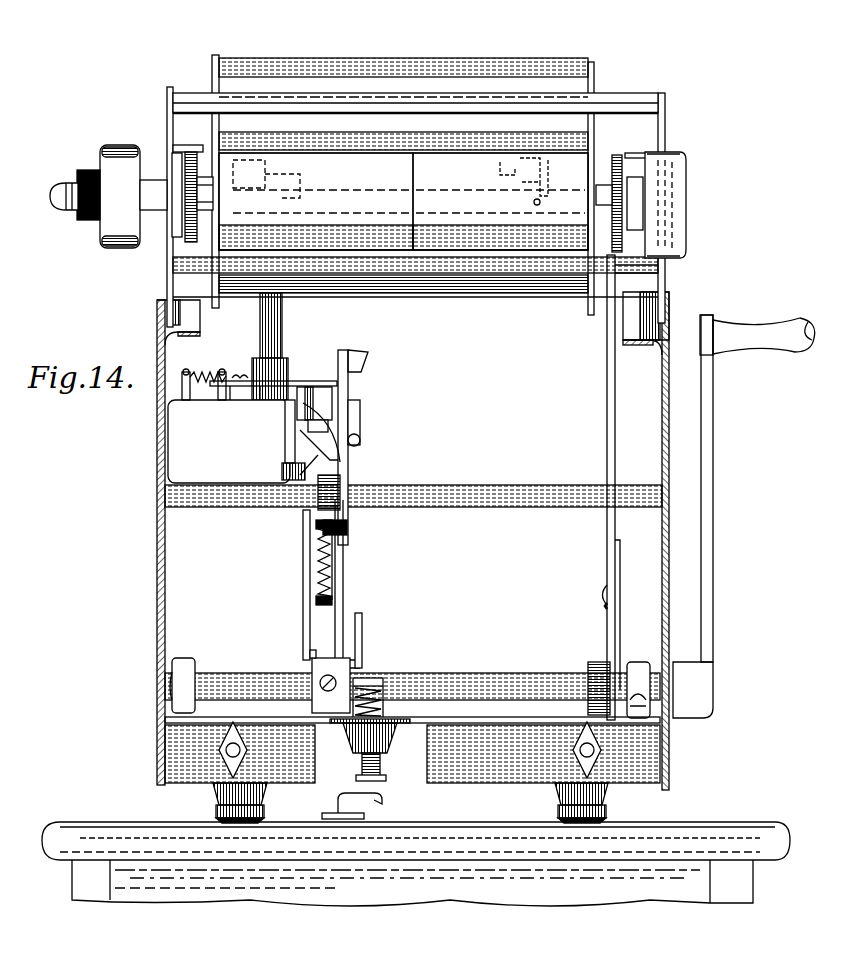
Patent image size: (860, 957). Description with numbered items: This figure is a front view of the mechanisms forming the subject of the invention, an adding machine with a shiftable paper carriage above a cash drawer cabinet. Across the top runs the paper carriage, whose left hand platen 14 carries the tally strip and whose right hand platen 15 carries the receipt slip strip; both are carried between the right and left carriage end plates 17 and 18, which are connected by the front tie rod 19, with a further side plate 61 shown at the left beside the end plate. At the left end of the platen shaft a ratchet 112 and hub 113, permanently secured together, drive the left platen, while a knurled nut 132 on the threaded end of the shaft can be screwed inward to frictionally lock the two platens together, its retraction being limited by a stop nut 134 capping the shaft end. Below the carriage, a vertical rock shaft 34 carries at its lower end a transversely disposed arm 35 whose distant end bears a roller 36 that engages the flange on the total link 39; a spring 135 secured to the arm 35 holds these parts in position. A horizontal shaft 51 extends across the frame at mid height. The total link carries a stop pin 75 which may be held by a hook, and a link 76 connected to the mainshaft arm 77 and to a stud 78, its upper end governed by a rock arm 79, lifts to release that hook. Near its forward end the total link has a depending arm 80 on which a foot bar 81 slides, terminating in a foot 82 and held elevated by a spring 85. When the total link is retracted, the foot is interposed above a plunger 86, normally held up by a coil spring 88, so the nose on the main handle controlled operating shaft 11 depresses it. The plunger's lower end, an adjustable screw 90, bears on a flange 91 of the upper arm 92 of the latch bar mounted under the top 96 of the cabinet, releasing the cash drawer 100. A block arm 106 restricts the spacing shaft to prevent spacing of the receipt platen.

The main handle controlled operating shaft 11 is at (470, 682).
The left hand platen 14 is at (316, 201).
The right hand platen 15 is at (500, 201).
The right carriage end plate 17 is at (594, 94).
The left carriage end plate 18 is at (212, 68).
The front tie rod 19 is at (403, 132).
The vertical rock shaft 34 is at (280, 325).
The transversely disposed arm 35 is at (245, 392).
The roller 36 is at (348, 392).
The total link 39 is at (348, 451).
The shaft 51 is at (452, 486).
The side plate 61 is at (192, 114).
The stop pin 75 is at (315, 433).
The link 76 is at (303, 562).
The mainshaft arm 77 is at (320, 665).
The stud 78 is at (282, 471).
The rock arm 79 is at (300, 425).
The depending arm 80 is at (340, 625).
The foot bar 81 is at (335, 612).
The foot 82 is at (364, 680).
The spring 85 is at (318, 574).
The plunger 86 is at (386, 700).
The coil spring 88 is at (353, 708).
The adjustable screw 90 is at (380, 768).
The flange 91 is at (384, 798).
The upper arm 92 is at (338, 805).
The top of the cash drawer cabinet 96 is at (176, 822).
The cash drawer 100 is at (412, 883).
The block arm 106 is at (300, 405).
The ratchet 112 is at (185, 230).
The hub 113 is at (180, 235).
The knurled nut 132 is at (86, 170).
The stop nut 134 is at (60, 205).
The spring 135 is at (202, 373).